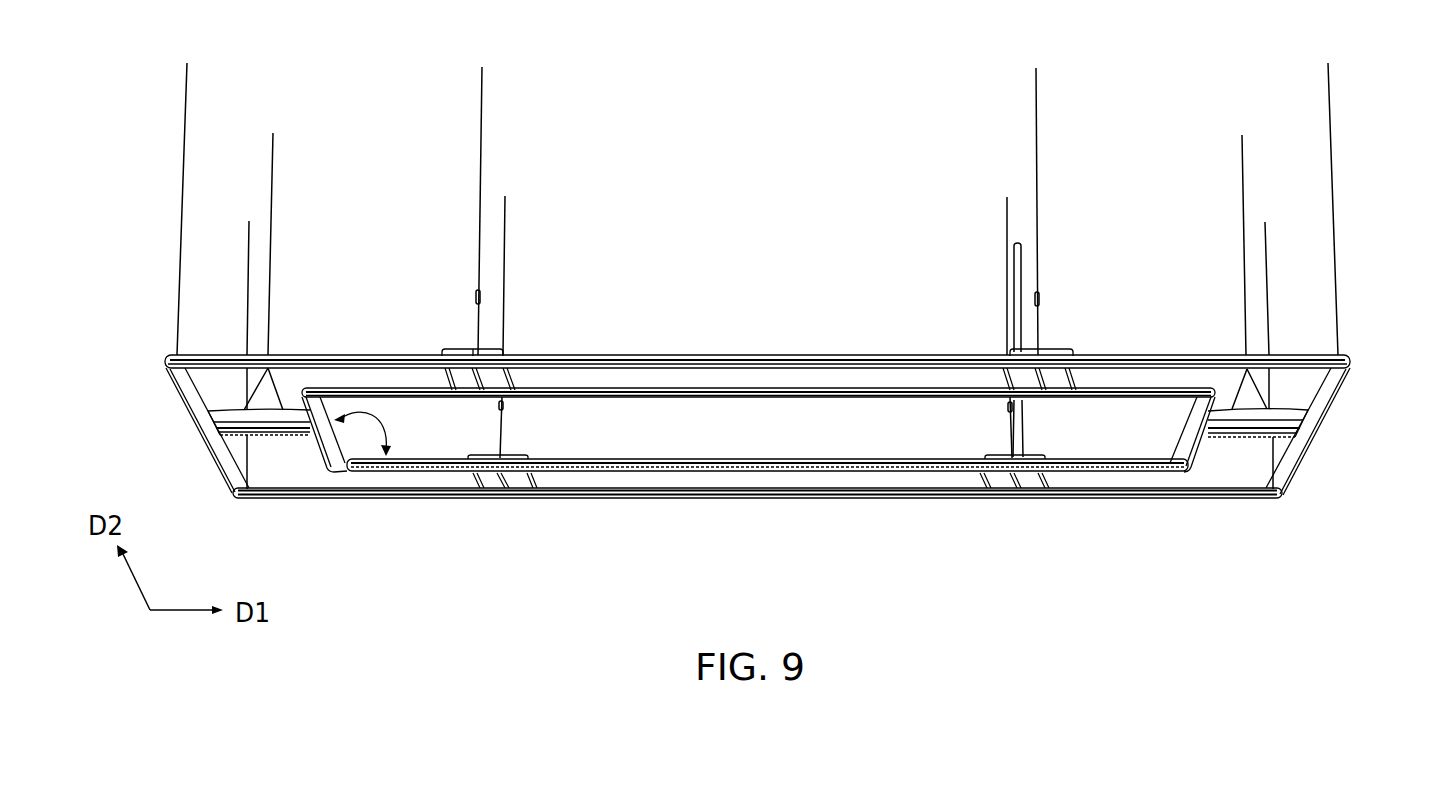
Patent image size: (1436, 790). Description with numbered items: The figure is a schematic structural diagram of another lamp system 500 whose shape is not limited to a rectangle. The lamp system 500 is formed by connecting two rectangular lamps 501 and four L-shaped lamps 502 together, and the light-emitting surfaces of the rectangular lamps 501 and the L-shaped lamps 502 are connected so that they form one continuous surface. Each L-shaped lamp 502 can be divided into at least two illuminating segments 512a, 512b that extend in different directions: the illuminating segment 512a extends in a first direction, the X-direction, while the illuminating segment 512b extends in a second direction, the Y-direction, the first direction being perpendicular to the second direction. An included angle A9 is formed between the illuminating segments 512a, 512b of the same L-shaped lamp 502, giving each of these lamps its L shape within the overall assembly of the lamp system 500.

The lamp system 500 is at (753, 344).
The rectangular lamp 501 is at (836, 355).
The L-shaped lamp 502 is at (210, 389).
The illuminating segment 512a is at (1138, 480).
The illuminating segment 512b is at (1230, 468).
The included angle A9 is at (378, 431).